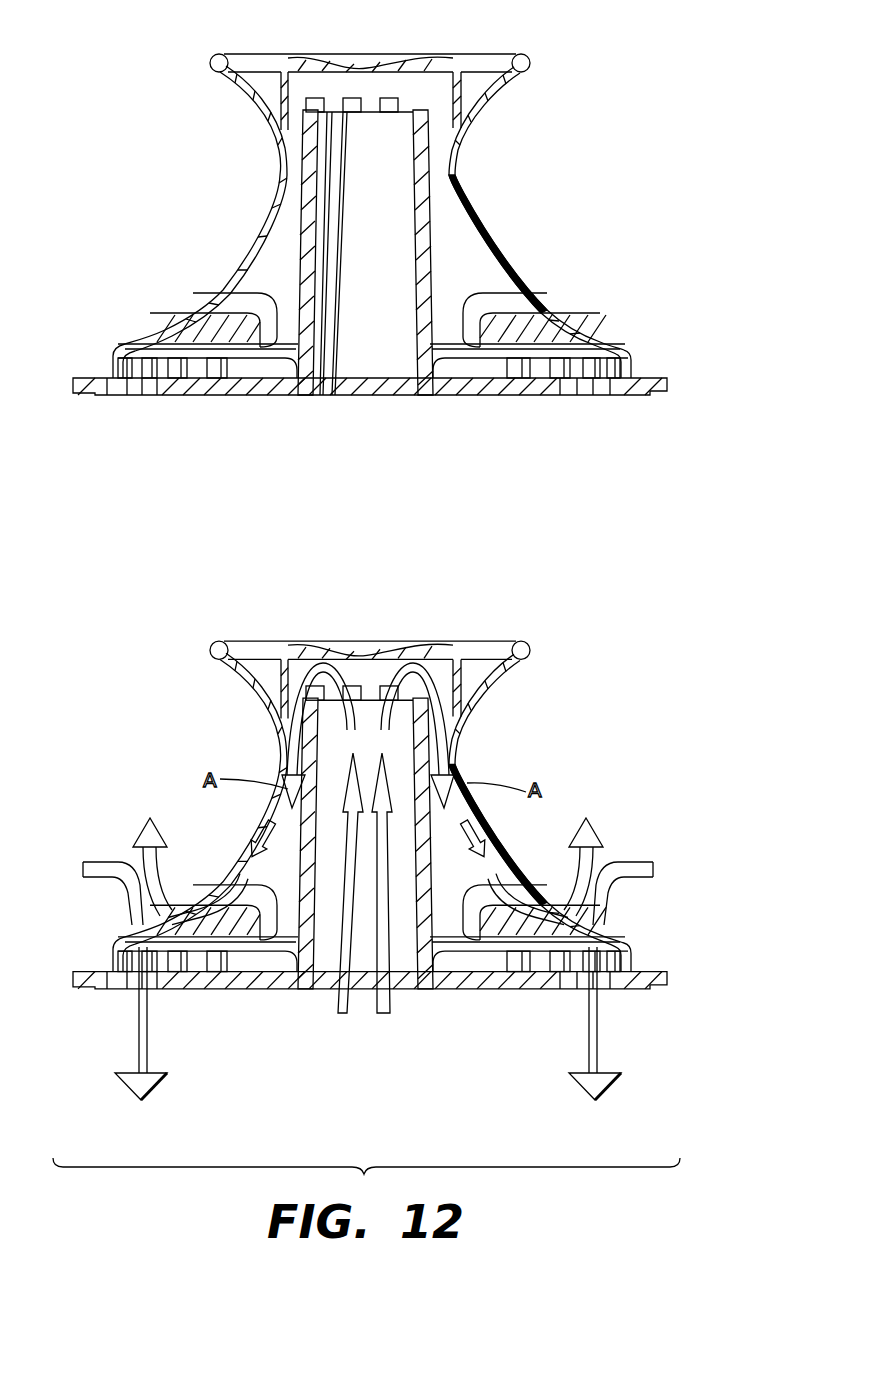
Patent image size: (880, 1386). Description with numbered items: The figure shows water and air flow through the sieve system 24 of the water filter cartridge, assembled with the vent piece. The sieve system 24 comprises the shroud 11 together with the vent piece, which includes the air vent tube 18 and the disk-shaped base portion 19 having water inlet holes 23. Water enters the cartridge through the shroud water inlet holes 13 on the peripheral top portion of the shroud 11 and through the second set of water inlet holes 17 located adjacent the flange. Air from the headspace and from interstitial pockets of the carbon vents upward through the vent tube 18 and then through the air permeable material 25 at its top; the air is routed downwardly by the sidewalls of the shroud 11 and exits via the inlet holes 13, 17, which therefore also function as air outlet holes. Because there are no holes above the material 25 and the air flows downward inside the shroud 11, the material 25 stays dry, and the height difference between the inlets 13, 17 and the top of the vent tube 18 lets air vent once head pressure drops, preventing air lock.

The shroud 11 is at (478, 210).
The shroud water inlet holes 13 is at (146, 371).
The second set of water inlet holes 17 is at (206, 326).
The air vent tube 18 is at (356, 207).
The base portion 19 is at (668, 389).
The vent tube water inlet holes 23 is at (618, 396).
The sieve system 24 is at (556, 260).
The air permeable material 25 is at (392, 96).